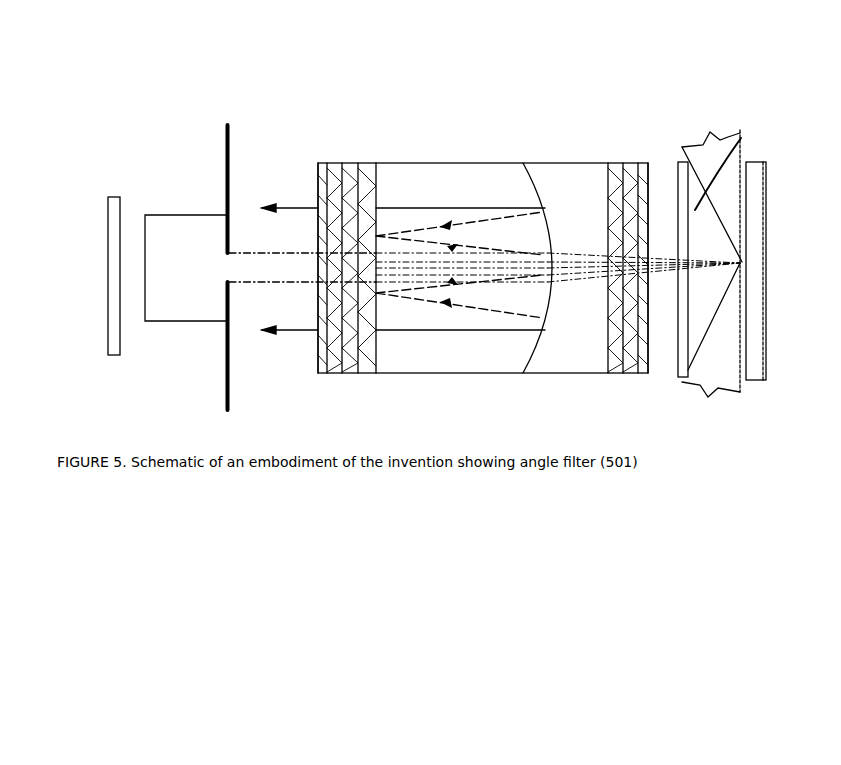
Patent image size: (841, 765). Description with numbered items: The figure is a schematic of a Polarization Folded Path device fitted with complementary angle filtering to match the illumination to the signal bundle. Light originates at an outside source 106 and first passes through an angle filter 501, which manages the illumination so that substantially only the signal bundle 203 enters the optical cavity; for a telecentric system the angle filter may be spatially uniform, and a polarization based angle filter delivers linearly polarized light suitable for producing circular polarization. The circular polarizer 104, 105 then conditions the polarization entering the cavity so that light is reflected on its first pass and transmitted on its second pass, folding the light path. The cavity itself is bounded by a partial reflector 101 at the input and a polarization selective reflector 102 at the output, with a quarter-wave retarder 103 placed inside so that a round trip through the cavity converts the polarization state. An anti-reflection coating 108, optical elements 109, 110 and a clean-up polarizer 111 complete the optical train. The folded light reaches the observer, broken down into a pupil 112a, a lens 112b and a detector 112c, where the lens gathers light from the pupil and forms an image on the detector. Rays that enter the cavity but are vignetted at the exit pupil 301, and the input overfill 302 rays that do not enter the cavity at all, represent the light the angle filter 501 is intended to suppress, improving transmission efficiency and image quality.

The partial reflector 101 is at (541, 355).
The polarization selective reflector 102 is at (345, 375).
The quarter-wave retarder 103 is at (373, 375).
The circular polarizer 104 is at (634, 365).
The circular polarizer 105 is at (606, 360).
The outside source 106 is at (784, 264).
The anti-reflection coating 108 is at (349, 278).
The optical element 109 is at (486, 170).
The optical element 110 is at (614, 271).
The clean-up polarizer 111 is at (321, 375).
The pupil 112a is at (194, 251).
The lens 112b is at (180, 282).
The detector 112c is at (89, 259).
The signal bundle 203 is at (243, 253).
The exit pupil 301 is at (695, 280).
The input overfill 302 is at (733, 208).
The angle filter 501 is at (682, 147).